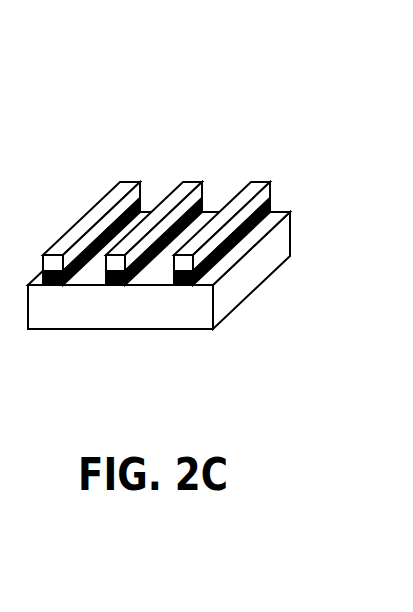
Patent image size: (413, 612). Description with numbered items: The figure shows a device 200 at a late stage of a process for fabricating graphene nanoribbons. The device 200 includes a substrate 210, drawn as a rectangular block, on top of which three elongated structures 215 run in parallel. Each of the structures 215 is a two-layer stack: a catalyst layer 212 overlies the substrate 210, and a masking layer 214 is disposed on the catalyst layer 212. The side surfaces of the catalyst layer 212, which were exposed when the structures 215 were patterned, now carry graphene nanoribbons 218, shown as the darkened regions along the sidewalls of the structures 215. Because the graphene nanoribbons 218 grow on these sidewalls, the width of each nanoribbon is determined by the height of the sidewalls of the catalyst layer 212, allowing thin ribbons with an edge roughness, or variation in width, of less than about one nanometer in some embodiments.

The device 200 is at (213, 52).
The substrate 210 is at (83, 331).
The catalyst layer 212 is at (38, 280).
The masking layer 214 is at (61, 253).
The structures 215 is at (284, 166).
The graphene nanoribbons 218 is at (273, 207).